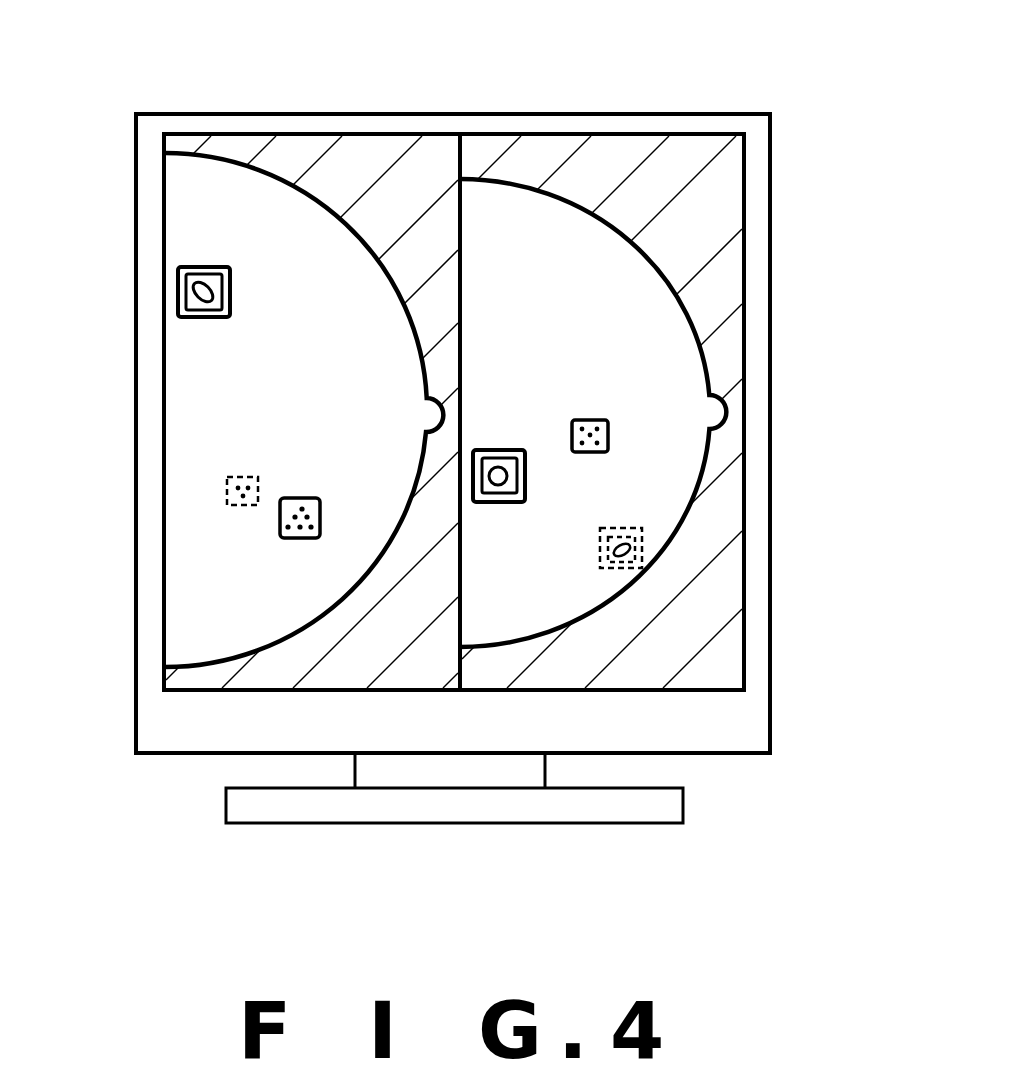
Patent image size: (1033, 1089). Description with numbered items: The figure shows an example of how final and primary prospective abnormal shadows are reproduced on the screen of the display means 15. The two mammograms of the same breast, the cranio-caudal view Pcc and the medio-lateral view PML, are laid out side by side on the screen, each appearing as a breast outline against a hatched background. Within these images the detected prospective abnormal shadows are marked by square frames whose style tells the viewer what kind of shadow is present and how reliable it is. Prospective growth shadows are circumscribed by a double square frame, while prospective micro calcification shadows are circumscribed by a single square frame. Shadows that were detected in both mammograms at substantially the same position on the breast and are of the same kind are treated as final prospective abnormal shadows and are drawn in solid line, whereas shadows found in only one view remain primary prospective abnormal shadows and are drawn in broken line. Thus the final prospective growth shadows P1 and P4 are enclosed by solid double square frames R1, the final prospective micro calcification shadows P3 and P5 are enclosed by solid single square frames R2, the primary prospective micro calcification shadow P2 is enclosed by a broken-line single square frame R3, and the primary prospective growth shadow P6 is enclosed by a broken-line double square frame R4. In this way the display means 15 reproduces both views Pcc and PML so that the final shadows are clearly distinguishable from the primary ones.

The display means 15 is at (792, 213).
The cranio-caudal view Pcc is at (328, 148).
The medio-lateral view PML is at (633, 155).
The solid-line double square frames R1 is at (287, 416).
The solid-line single square frames R2 is at (443, 476).
The broken-line single square frame R3 is at (232, 509).
The broken-line double square frame R4 is at (572, 553).
The final prospective growth shadow P1 is at (234, 292).
The primary prospective micro calcification shadow P2 is at (242, 468).
The final prospective micro calcification shadow P3 is at (304, 497).
The final prospective growth shadow P4 is at (499, 453).
The final prospective micro calcification shadow P5 is at (562, 366).
The primary prospective growth shadow P6 is at (617, 527).